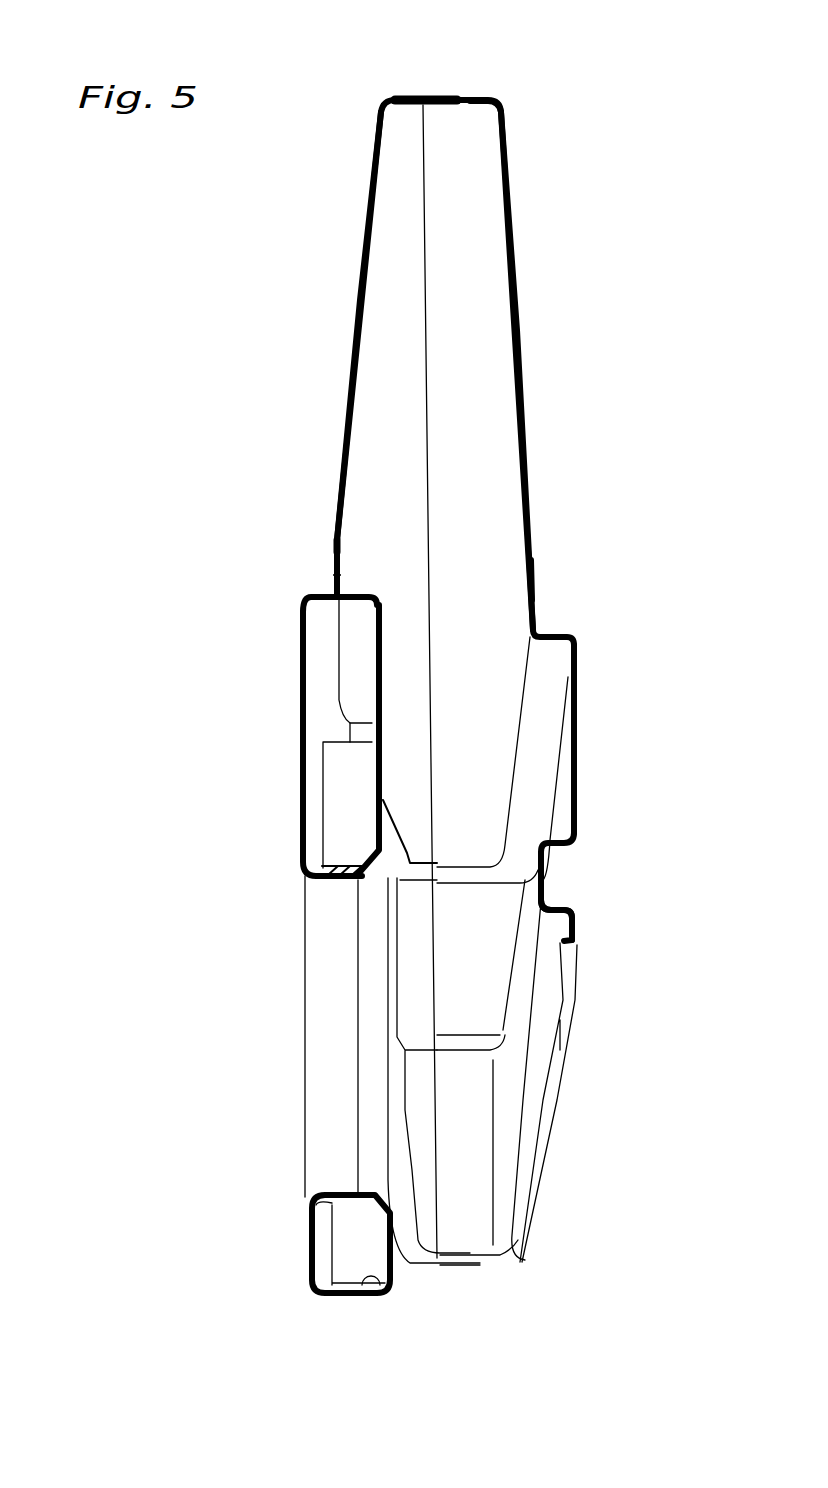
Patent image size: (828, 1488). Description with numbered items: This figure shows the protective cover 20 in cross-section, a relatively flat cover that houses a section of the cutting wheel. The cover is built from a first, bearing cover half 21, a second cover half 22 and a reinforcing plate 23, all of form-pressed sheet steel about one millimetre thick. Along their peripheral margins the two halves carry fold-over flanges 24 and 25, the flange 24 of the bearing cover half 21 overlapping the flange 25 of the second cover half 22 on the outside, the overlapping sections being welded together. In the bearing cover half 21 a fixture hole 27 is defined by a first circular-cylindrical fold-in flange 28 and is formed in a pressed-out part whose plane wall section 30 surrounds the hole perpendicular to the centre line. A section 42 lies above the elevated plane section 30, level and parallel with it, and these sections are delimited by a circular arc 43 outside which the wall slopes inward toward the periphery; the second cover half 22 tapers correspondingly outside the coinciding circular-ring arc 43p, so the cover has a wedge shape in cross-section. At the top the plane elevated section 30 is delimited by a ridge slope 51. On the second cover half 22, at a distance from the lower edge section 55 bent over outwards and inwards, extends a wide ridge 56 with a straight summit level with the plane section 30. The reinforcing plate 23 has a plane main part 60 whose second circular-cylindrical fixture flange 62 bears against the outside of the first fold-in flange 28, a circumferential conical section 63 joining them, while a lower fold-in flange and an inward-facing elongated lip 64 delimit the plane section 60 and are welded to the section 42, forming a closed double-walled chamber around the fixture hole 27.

The protective cover 20 is at (550, 483).
The bearing cover half 21 is at (347, 373).
The second cover half 22 is at (523, 367).
The reinforcing plate 23 is at (362, 589).
The fold-over flange 24 is at (423, 96).
The fold-over flange 25 is at (441, 104).
The fixture hole 27 is at (325, 1072).
The first circular-cylindrical fold-in flange 28 is at (343, 880).
The plane wall section 30 is at (302, 742).
The section above the elevated plane section 42 is at (332, 578).
The circular arc 43 is at (332, 545).
The circular-ring arc 43p is at (537, 565).
The ridge slope 51 is at (312, 593).
The lower edge section 55 is at (578, 928).
The wide ridge 56 is at (577, 766).
The plane main part 60 is at (383, 713).
The second circular-cylindrical fixture flange 62 is at (340, 866).
The circumferential conical section 63 is at (372, 987).
The fold-in flange / elongated lip 64 is at (343, 575).